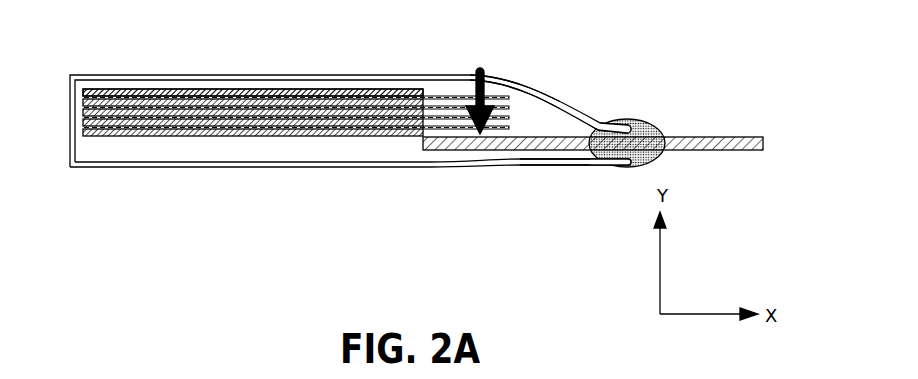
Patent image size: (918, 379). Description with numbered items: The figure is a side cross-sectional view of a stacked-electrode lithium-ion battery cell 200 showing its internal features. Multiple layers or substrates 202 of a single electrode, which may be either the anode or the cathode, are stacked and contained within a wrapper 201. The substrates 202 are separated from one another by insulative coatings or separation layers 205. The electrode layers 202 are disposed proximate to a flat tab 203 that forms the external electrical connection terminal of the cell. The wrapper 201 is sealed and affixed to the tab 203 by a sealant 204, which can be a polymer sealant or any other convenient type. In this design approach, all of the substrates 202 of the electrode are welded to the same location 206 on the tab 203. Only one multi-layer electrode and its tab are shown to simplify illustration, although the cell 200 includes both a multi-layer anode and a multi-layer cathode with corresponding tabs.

The stacked-electrode Li-ion battery cell 200 is at (426, 86).
The wrapper 201 is at (553, 100).
The electrode layers 202 is at (200, 98).
The flat tab 203 is at (715, 137).
The sealant 204 is at (634, 120).
The separation layers 205 is at (97, 90).
The weld location 206 is at (488, 71).